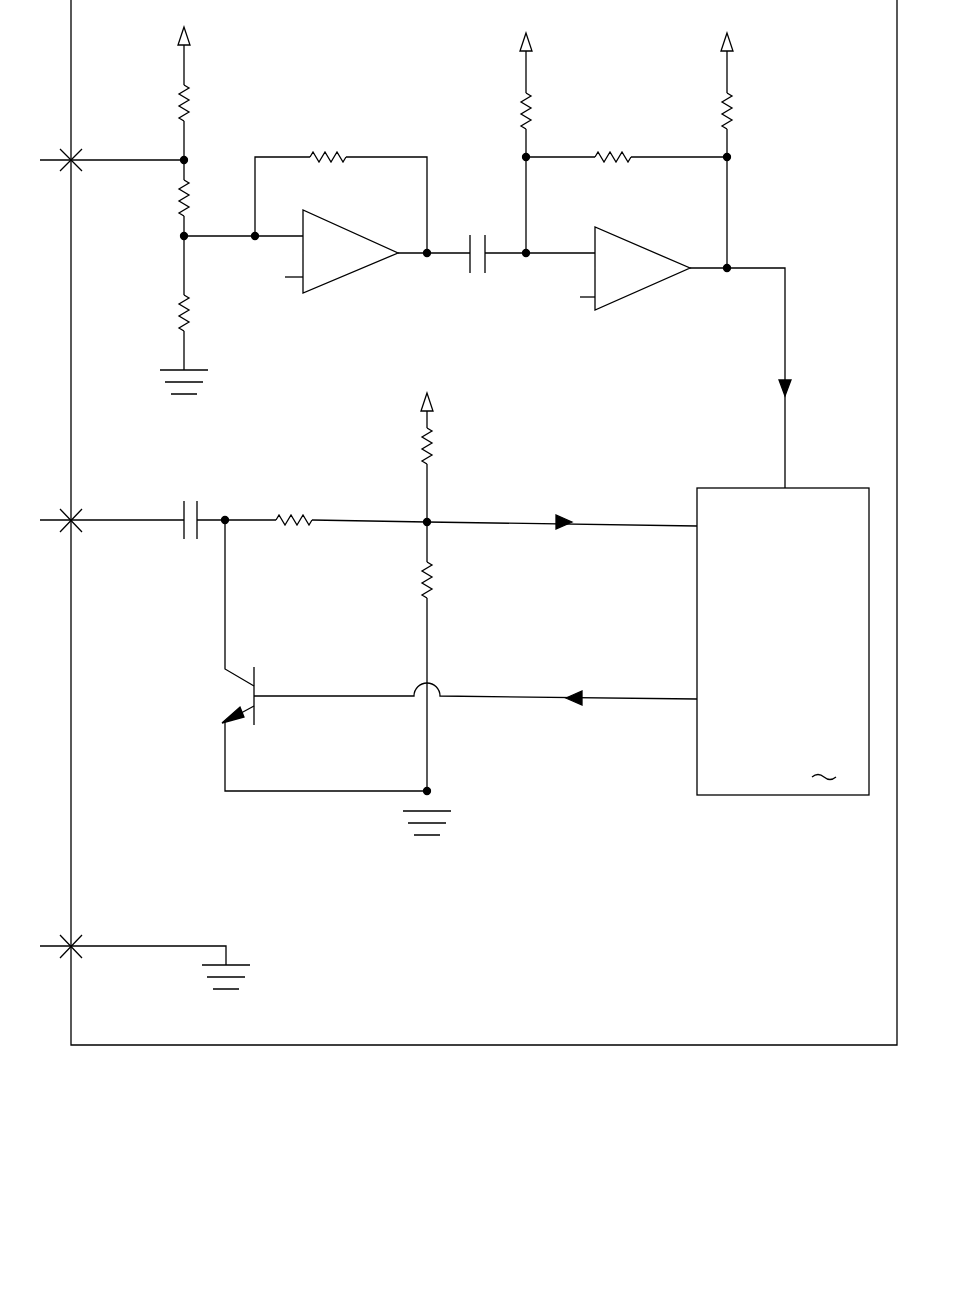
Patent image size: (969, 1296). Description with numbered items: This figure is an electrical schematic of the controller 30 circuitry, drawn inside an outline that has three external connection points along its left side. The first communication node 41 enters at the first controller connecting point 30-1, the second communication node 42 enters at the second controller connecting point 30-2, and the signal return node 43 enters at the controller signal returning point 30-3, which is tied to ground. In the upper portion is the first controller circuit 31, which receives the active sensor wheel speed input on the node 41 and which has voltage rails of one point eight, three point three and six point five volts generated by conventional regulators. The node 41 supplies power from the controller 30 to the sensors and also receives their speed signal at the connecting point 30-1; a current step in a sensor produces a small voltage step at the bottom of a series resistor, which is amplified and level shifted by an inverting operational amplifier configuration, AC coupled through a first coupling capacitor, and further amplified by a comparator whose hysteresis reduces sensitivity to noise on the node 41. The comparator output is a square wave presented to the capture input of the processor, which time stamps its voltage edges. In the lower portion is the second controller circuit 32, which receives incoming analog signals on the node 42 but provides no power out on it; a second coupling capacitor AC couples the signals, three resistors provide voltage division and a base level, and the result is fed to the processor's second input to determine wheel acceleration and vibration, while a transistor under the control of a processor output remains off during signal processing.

The controller 30 is at (676, 990).
The first controller connecting point 30-1 is at (112, 145).
The second controller connecting point 30-2 is at (112, 503).
The controller signal returning point 30-3 is at (145, 954).
The first controller circuit 31 is at (612, 392).
The second controller circuit 32 is at (626, 795).
The first communication node 41 is at (66, 157).
The second communication node 42 is at (66, 517).
The signal return node 43 is at (66, 943).